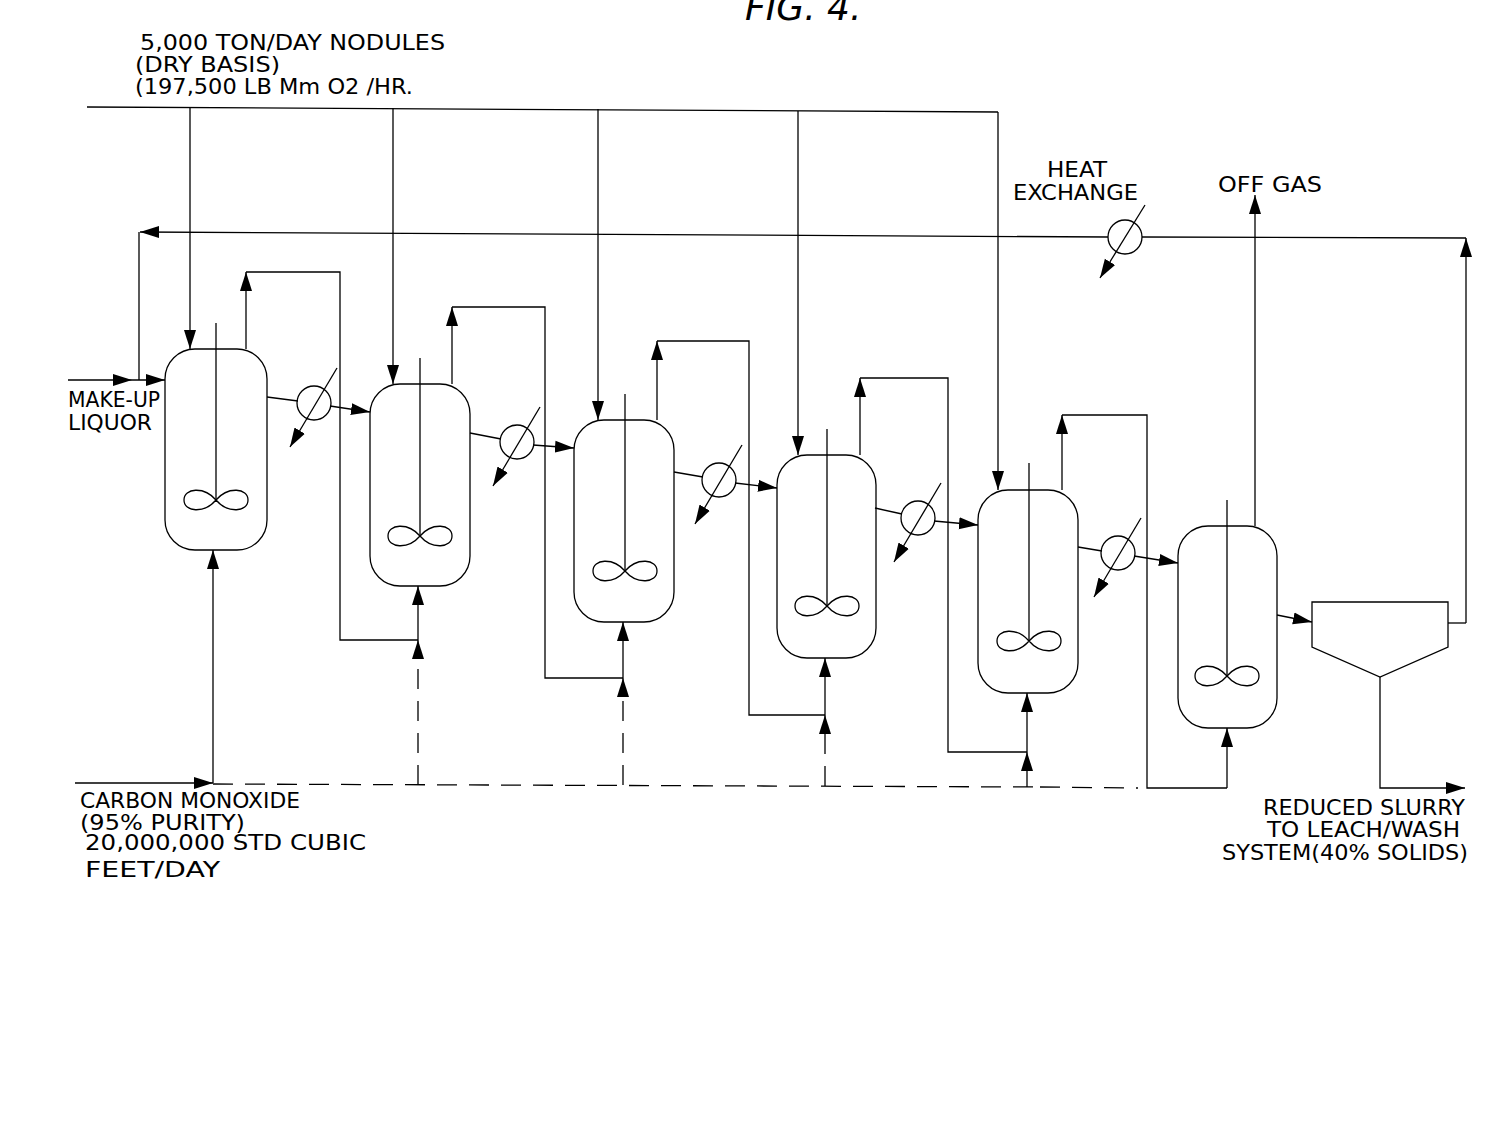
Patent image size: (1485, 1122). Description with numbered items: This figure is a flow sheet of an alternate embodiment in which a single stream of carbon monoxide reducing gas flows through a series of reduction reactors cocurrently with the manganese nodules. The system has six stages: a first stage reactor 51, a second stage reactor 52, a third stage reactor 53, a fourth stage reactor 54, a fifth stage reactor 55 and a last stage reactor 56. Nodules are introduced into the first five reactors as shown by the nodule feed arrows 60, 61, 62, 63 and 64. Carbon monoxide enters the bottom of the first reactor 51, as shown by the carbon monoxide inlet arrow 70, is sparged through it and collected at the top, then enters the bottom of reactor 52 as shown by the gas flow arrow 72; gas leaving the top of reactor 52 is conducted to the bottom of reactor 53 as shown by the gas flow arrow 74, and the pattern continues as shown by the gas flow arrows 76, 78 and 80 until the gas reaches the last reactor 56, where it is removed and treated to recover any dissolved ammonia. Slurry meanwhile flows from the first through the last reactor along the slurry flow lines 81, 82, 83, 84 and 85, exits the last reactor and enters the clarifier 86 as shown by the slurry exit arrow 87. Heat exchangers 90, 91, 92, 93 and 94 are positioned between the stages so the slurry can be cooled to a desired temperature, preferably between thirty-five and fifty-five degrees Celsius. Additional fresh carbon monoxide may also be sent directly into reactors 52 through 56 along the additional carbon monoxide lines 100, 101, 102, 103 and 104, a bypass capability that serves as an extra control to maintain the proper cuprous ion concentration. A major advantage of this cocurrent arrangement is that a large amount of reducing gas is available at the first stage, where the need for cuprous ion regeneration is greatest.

The first stage reactor 51 is at (200, 553).
The second stage reactor 52 is at (408, 588).
The third stage reactor 53 is at (610, 626).
The fourth stage reactor 54 is at (812, 662).
The fifth stage reactor 55 is at (1010, 697).
The last stage reactor 56 is at (1210, 732).
The nodule feed arrow 60 is at (192, 178).
The nodule feed arrow 61 is at (395, 181).
The nodule feed arrow 62 is at (600, 187).
The nodule feed arrow 63 is at (800, 187).
The nodule feed arrow 64 is at (1000, 143).
The carbon monoxide inlet arrow 70 is at (214, 705).
The gas flow arrow 72 is at (420, 630).
The gas flow arrow 74 is at (625, 665).
The gas flow arrow 76 is at (827, 696).
The gas flow arrow 78 is at (1030, 734).
The gas flow arrow 80 is at (1230, 768).
The slurry flow line 81 is at (278, 395).
The slurry flow line 82 is at (484, 435).
The slurry flow line 83 is at (688, 474).
The slurry flow line 84 is at (884, 506).
The slurry flow line 85 is at (1084, 545).
The clarifier 86 is at (1372, 602).
The slurry exit arrow 87 is at (1287, 613).
The heat exchanger 90 is at (323, 420).
The heat exchanger 91 is at (527, 458).
The heat exchanger 92 is at (731, 497).
The heat exchanger 93 is at (933, 535).
The heat exchanger 94 is at (1133, 570).
The additional carbon monoxide line 100 is at (420, 732).
The additional carbon monoxide line 101 is at (625, 745).
The additional carbon monoxide line 102 is at (827, 762).
The additional carbon monoxide line 103 is at (1032, 781).
The additional carbon monoxide line 104 is at (1126, 785).